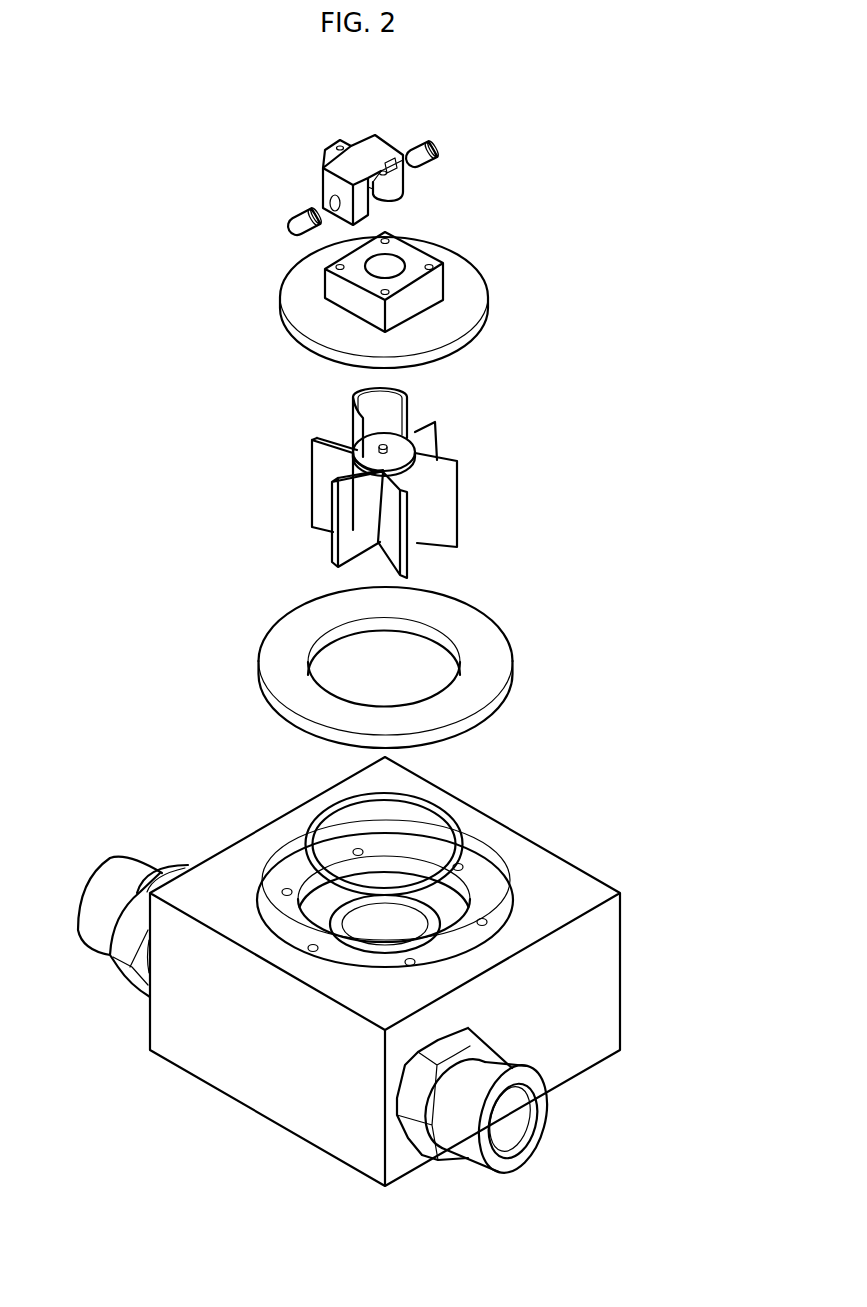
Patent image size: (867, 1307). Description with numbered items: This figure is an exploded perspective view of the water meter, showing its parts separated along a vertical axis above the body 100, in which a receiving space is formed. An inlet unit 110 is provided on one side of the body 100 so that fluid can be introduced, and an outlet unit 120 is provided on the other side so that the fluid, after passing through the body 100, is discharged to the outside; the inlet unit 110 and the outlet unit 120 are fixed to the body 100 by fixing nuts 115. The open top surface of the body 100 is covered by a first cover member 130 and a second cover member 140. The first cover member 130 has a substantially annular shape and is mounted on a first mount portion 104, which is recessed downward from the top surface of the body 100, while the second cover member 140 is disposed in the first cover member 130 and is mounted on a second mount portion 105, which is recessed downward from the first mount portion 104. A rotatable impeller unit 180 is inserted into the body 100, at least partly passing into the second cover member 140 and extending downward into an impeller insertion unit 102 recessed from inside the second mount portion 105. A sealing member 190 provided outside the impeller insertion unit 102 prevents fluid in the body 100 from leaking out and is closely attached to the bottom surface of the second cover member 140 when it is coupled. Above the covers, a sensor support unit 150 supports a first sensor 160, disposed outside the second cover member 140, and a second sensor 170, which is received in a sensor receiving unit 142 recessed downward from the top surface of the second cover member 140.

The body 100 is at (612, 948).
The impeller insertion unit 102 is at (378, 930).
The first mount portion 104 is at (483, 873).
The second mount portion 105 is at (312, 922).
The inlet unit 110 is at (113, 872).
The fixing nut 115 is at (128, 917).
The outlet unit 120 is at (510, 1148).
The first cover member 130 is at (482, 635).
The second cover member 140 is at (433, 287).
The sensor receiving unit 142 is at (387, 266).
The sensor support unit 150 is at (356, 150).
The first sensor 160 is at (310, 210).
The second sensor 170 is at (418, 152).
The impeller unit 180 is at (445, 437).
The sealing member 190 is at (435, 807).